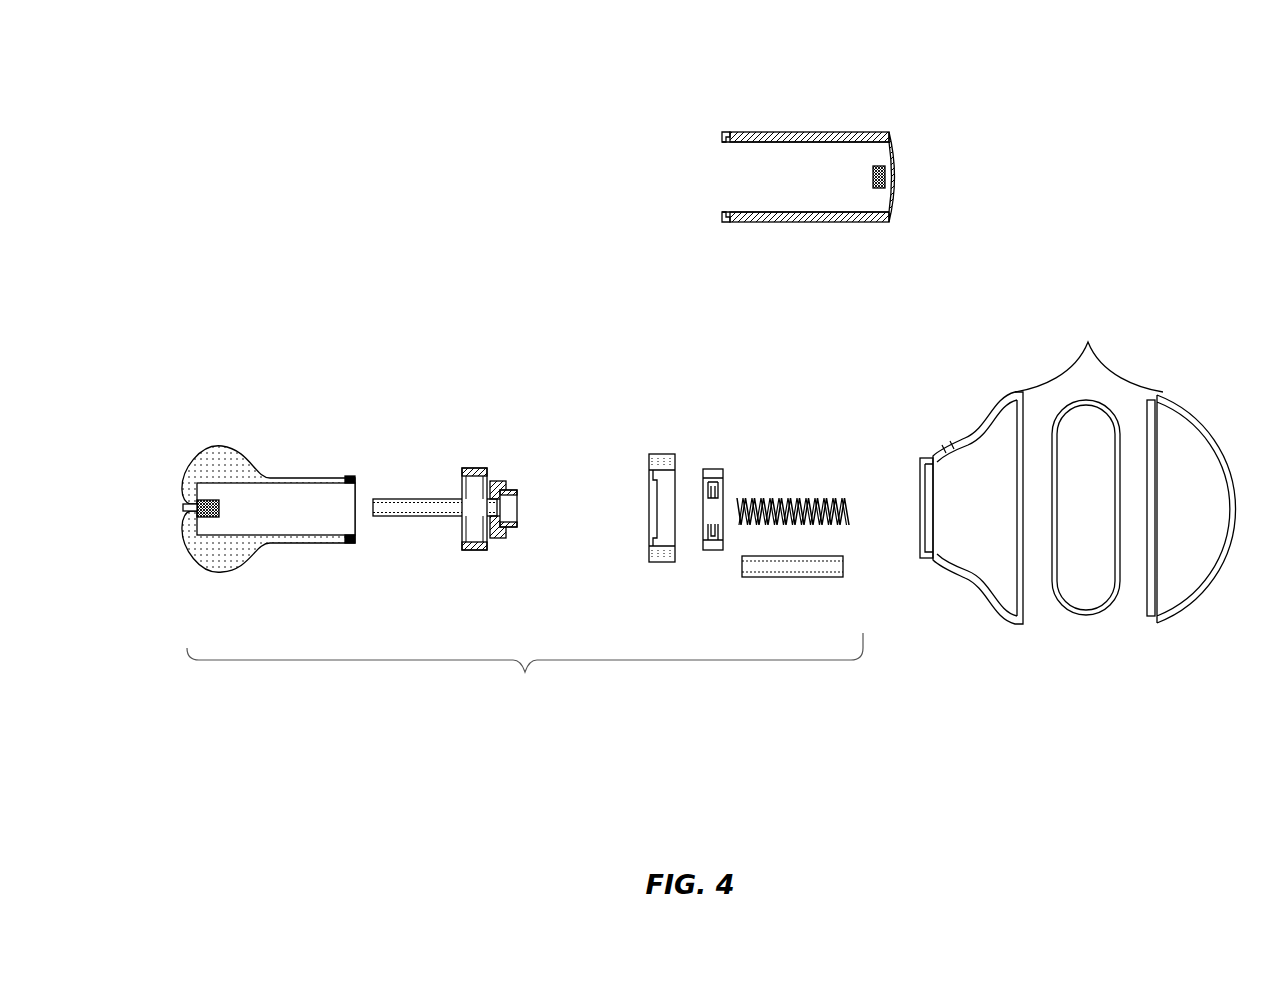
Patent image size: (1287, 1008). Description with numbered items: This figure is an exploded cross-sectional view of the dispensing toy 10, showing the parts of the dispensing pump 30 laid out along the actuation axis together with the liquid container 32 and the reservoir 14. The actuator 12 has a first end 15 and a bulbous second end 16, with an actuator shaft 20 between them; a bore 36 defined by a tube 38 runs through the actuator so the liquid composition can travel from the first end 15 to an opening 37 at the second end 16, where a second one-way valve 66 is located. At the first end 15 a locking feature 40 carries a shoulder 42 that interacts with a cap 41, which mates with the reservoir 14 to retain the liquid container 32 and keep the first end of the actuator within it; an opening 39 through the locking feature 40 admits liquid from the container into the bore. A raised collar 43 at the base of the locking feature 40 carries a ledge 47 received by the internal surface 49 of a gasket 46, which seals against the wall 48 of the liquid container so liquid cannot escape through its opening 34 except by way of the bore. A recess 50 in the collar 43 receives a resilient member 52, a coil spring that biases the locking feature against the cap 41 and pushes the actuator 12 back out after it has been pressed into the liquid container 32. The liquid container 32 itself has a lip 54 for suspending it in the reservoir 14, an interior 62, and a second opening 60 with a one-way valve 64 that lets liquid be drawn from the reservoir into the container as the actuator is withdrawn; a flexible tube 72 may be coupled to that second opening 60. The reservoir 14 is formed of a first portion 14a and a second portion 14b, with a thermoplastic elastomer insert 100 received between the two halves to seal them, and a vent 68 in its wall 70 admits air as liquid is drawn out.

The dispensing toy 10 is at (440, 143).
The actuator 12 is at (263, 521).
The reservoir 14 is at (1056, 492).
The first portion 14a is at (950, 513).
The second portion 14b is at (1175, 615).
The first end 15 is at (343, 549).
The second end 16 is at (217, 578).
The actuator shaft 20 is at (300, 478).
The dispensing pump 30 is at (525, 690).
The liquid container 32 is at (798, 169).
The opening 34 is at (785, 169).
The bore 36 is at (653, 512).
The opening 37 is at (169, 505).
The tube 38 is at (410, 517).
The opening 39 is at (503, 511).
The locking feature 40 is at (488, 547).
The cap 41 is at (665, 457).
The shoulder 42 is at (506, 518).
The collar 43 is at (531, 511).
The gasket 46 is at (720, 497).
The ledge 47 is at (500, 539).
The wall 48 is at (828, 222).
The internal surface 49 is at (717, 549).
The recess 50 is at (552, 507).
The resilient member 52 is at (804, 500).
The lip 54 is at (727, 133).
The second opening 60 is at (884, 174).
The interior 62 is at (805, 177).
The one-way valve 64 is at (884, 190).
The second one-way valve 66 is at (208, 500).
The vent 68 is at (952, 441).
The wall 70 is at (997, 405).
The flexible tube 72 is at (800, 578).
The thermoplastic elastomer insert 100 is at (1087, 617).